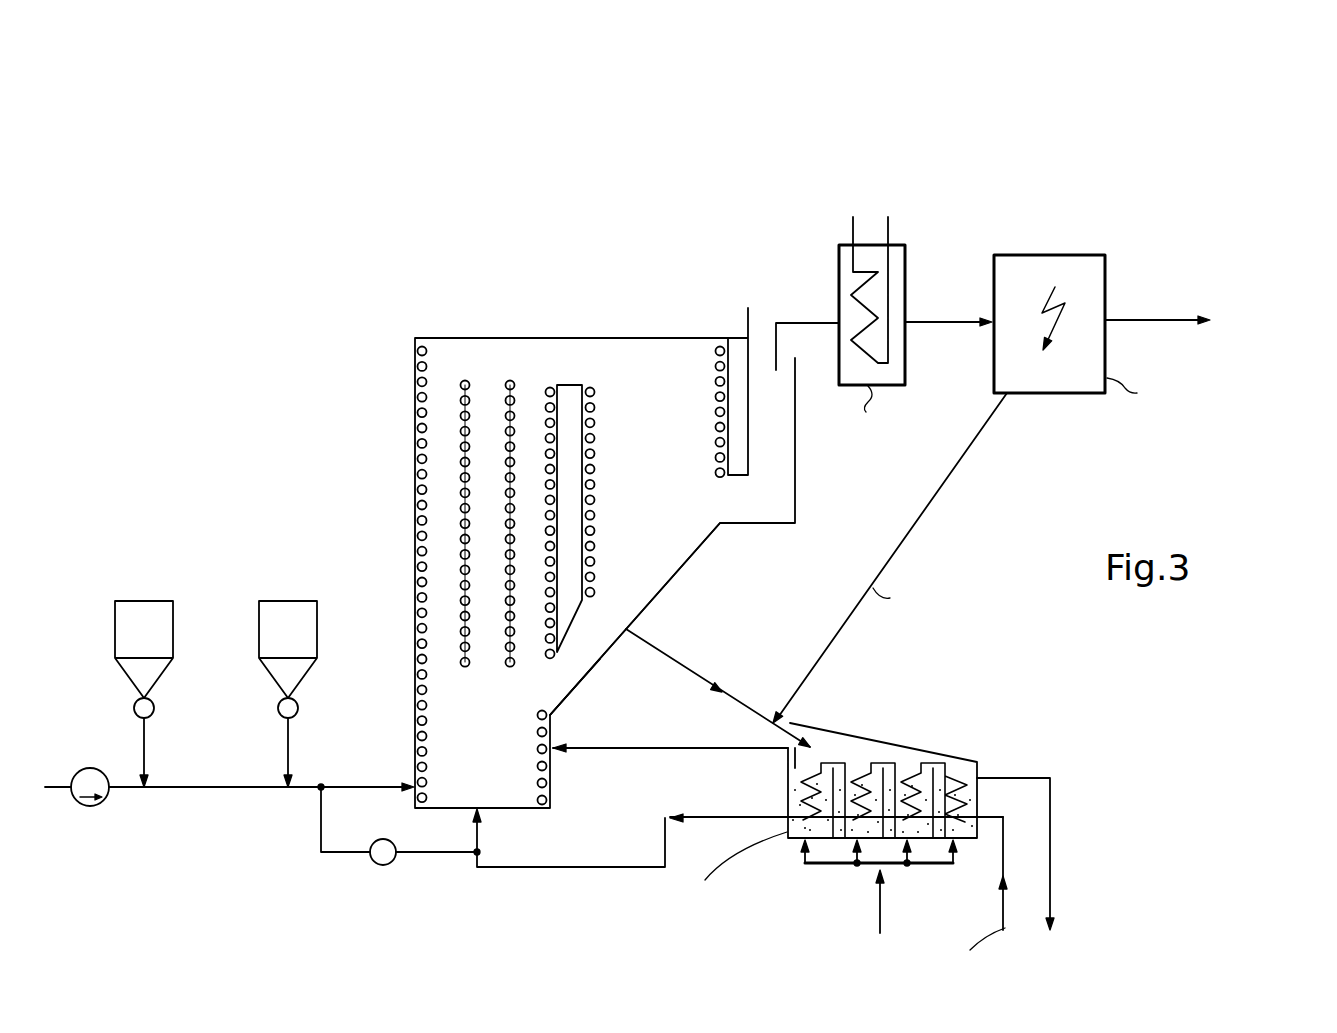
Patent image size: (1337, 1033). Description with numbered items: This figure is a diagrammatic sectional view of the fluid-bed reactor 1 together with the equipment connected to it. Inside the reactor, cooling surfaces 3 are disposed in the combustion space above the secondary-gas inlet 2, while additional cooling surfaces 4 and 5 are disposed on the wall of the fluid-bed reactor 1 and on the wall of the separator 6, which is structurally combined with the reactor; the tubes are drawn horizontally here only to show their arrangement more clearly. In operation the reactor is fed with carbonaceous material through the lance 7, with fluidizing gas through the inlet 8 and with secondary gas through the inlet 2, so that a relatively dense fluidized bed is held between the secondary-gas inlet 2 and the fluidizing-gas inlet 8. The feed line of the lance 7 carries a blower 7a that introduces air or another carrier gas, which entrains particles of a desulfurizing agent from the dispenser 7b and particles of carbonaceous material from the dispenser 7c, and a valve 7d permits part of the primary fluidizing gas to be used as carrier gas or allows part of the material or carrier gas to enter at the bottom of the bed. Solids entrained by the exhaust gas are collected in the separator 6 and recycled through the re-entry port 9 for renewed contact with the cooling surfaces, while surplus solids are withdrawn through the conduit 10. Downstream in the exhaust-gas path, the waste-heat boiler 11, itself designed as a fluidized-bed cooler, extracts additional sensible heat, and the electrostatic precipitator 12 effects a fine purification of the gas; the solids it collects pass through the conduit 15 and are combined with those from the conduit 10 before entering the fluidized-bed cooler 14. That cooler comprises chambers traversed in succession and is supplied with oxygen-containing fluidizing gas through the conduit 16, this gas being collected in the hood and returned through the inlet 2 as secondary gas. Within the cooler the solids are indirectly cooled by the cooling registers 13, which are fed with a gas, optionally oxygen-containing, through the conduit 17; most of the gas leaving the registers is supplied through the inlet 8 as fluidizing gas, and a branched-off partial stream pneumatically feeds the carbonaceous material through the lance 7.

The fluid-bed reactor 1 is at (413, 620).
The secondary-gas inlet 2 is at (582, 750).
The cooling surfaces 3 is at (508, 380).
The additional cooling surfaces 4 is at (418, 524).
The additional cooling surfaces 5 is at (717, 368).
The separator 6 is at (687, 541).
The lance 7 is at (357, 784).
The blower 7a is at (95, 806).
The dispenser 7b is at (133, 600).
The dispenser 7c is at (284, 600).
The valve 7d is at (378, 866).
The fluidizing-gas inlet 8 is at (472, 822).
The re-entry port 9 is at (575, 667).
The conduit 10 is at (704, 680).
The waste-heat boiler 11 is at (905, 283).
The electrostatic precipitator 12 is at (1107, 291).
The cooling registers 13 is at (848, 822).
The fluidized-bed cooler 14 is at (934, 745).
The conduit 15 is at (910, 533).
The conduit 16 is at (878, 912).
The conduit 17 is at (1003, 912).